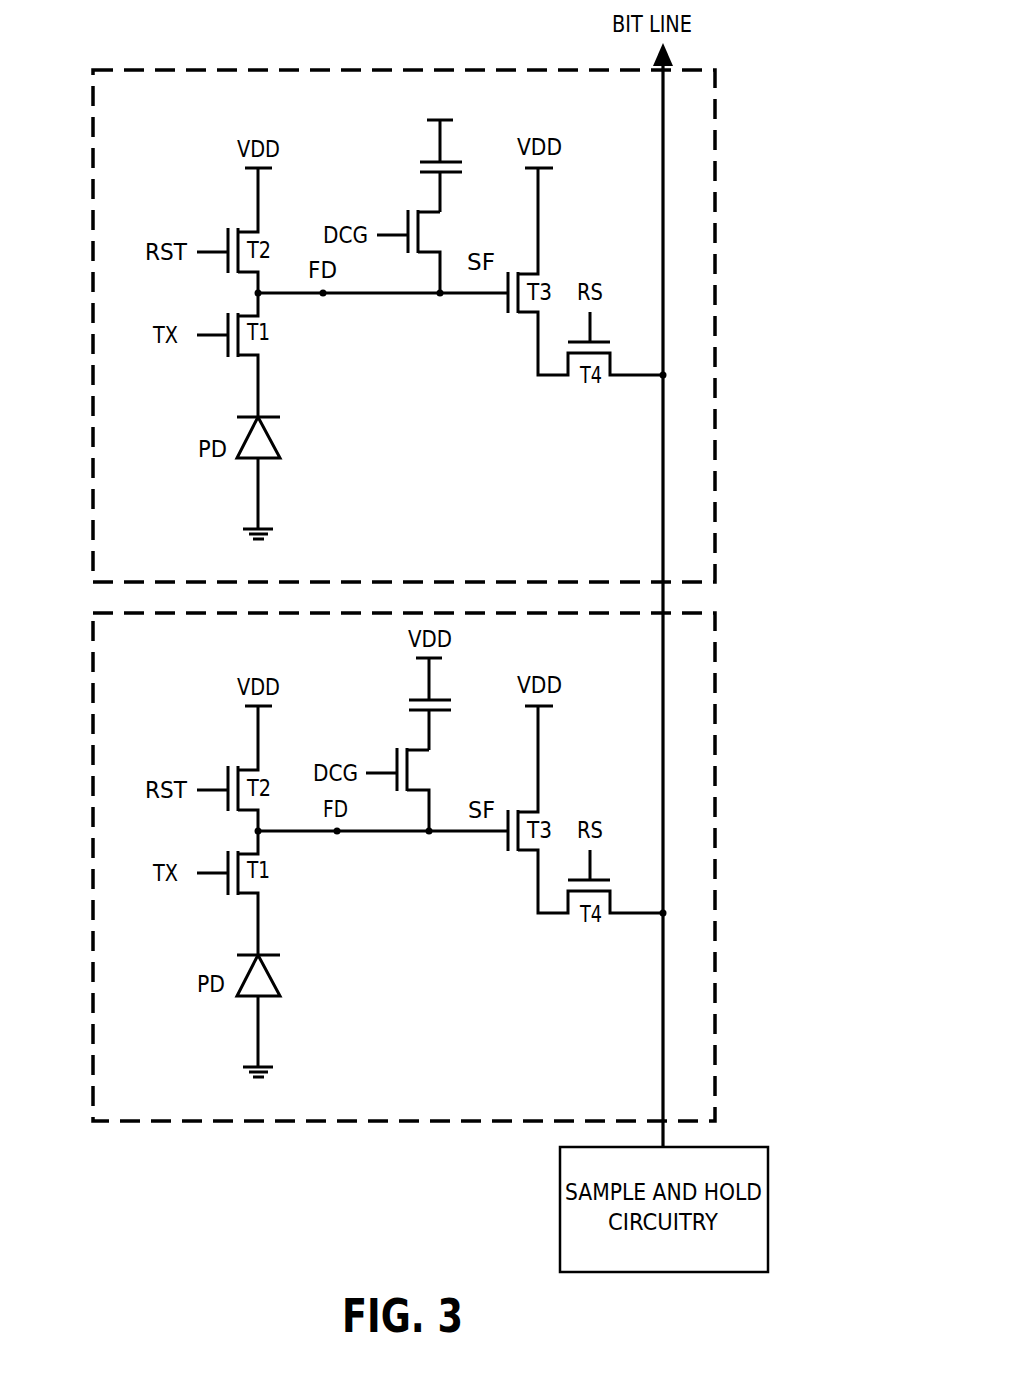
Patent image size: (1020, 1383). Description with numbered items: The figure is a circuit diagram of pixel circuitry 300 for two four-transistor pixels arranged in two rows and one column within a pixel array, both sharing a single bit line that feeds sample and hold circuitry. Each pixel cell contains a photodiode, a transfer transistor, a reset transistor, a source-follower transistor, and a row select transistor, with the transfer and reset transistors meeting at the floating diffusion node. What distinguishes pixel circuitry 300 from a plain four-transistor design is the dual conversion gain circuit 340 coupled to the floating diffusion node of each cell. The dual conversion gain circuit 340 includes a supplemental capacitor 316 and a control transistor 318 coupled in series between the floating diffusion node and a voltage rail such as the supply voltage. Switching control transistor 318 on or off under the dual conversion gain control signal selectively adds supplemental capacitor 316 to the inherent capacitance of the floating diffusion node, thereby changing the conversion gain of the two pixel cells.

The pixel circuitry 300 is at (715, 220).
The supplemental capacitor 316 is at (412, 435).
The control transistor 318 is at (411, 520).
The dual conversion gain circuit 340 is at (389, 273).